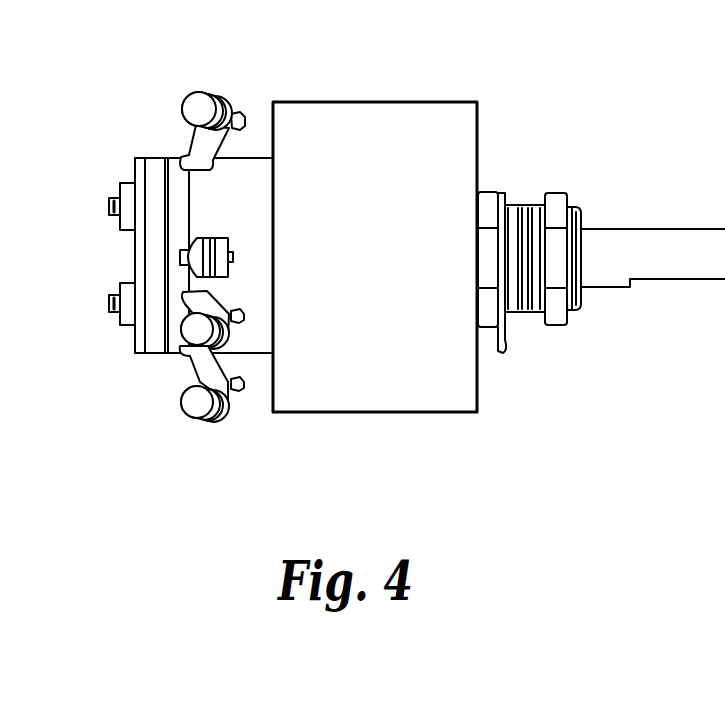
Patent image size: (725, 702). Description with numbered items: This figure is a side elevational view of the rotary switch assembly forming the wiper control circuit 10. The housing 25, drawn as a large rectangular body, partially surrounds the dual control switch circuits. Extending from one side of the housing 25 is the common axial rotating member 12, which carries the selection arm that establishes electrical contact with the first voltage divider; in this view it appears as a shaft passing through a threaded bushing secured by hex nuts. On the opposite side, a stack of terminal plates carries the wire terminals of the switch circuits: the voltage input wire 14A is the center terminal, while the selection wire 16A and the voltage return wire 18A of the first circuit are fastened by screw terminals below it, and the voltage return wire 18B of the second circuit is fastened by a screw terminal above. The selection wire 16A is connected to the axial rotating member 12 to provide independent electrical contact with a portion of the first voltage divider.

The wiper control circuit 10 is at (253, 458).
The axial rotating member 12 is at (675, 228).
The voltage input wire 14A is at (182, 248).
The selection wire 16A is at (190, 326).
The voltage return wire 18A is at (183, 403).
The voltage return wire 18B is at (192, 95).
The housing 25 is at (362, 100).